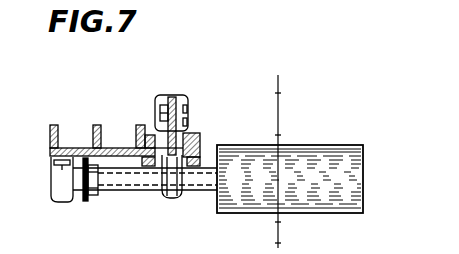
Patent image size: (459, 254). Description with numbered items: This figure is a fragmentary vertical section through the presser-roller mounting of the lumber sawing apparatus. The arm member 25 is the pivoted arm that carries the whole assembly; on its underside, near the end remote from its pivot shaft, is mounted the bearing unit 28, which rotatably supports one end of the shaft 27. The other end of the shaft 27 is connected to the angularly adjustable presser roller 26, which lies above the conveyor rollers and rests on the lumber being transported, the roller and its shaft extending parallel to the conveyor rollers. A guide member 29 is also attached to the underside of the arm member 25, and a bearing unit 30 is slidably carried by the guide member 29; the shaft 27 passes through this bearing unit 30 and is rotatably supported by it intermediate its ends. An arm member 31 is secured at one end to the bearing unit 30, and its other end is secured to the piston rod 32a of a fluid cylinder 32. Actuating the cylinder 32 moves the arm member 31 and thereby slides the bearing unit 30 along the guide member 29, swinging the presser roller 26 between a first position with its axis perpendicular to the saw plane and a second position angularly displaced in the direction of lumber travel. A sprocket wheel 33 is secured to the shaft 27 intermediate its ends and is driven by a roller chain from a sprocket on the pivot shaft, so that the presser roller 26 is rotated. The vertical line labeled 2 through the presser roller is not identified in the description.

The axis / centre line 2 is at (278, 113).
The arm member 25 is at (50, 127).
The presser roller 26 is at (325, 145).
The shaft 27 is at (116, 192).
The bearing unit 28 is at (58, 203).
The guide member 29 is at (152, 168).
The bearing unit 30 is at (173, 200).
The arm member 31 is at (188, 135).
The fluid cylinder 32 is at (188, 100).
The piston rod 32a is at (162, 108).
The sprocket wheel 33 is at (87, 201).